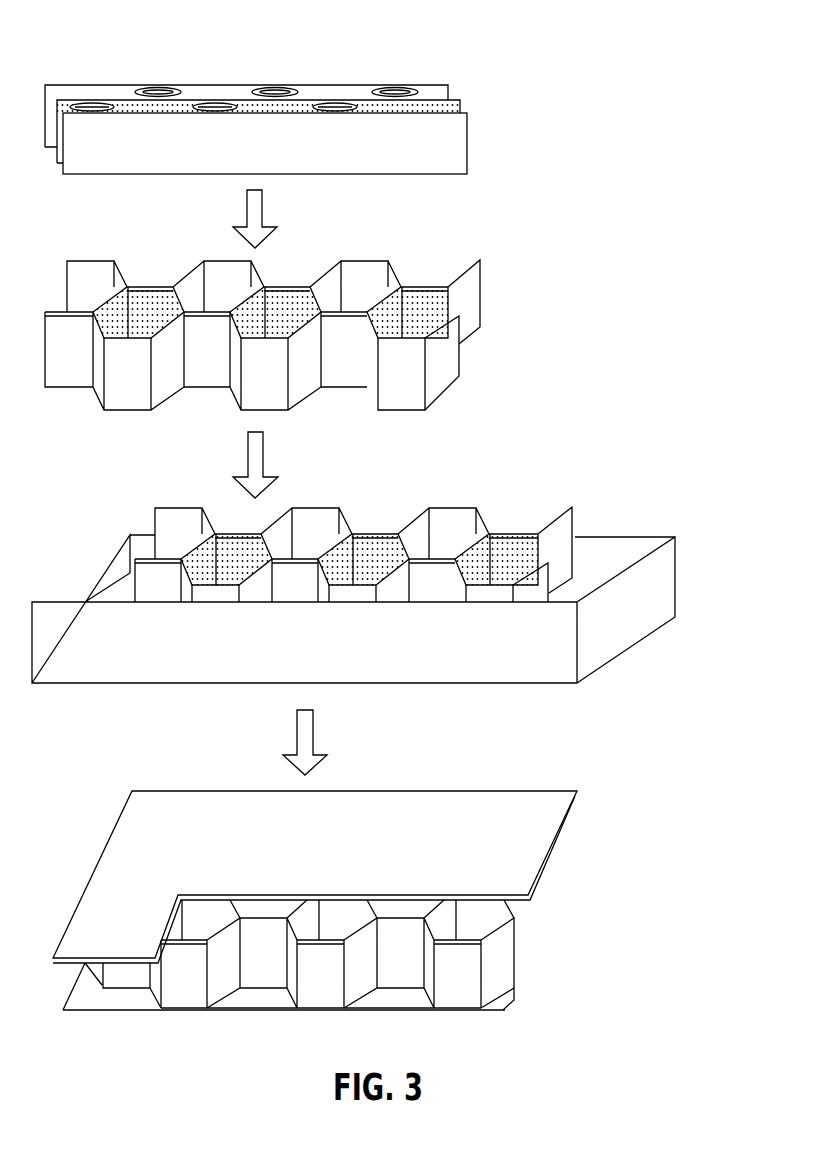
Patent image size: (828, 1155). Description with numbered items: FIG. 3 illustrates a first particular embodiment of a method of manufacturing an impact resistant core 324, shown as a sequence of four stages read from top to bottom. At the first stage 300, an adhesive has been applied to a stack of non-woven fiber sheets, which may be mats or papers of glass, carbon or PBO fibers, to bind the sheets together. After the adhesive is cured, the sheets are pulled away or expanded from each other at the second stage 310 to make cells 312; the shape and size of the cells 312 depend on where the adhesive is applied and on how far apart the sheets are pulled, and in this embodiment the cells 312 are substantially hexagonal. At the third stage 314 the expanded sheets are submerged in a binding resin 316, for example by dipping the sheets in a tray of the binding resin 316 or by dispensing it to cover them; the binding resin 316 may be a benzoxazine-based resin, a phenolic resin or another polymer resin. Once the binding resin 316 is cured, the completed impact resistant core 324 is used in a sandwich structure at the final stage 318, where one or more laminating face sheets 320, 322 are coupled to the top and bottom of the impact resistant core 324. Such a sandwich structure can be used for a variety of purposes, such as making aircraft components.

The adhesive application step 300 is at (361, 106).
The expansion step 310 is at (379, 301).
The cells 312 is at (196, 275).
The resin application step 314 is at (396, 575).
The binding resin 316 is at (592, 580).
The sandwich structure assembly step 318 is at (384, 898).
The laminating face sheet 320 is at (217, 843).
The laminating face sheet 322 is at (240, 1010).
The impact resistant core 324 is at (497, 967).